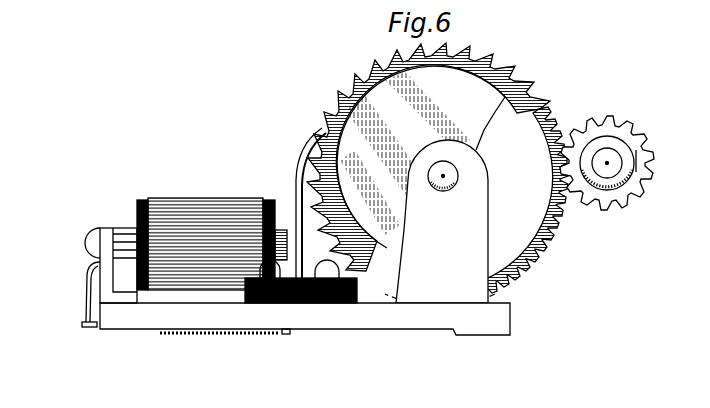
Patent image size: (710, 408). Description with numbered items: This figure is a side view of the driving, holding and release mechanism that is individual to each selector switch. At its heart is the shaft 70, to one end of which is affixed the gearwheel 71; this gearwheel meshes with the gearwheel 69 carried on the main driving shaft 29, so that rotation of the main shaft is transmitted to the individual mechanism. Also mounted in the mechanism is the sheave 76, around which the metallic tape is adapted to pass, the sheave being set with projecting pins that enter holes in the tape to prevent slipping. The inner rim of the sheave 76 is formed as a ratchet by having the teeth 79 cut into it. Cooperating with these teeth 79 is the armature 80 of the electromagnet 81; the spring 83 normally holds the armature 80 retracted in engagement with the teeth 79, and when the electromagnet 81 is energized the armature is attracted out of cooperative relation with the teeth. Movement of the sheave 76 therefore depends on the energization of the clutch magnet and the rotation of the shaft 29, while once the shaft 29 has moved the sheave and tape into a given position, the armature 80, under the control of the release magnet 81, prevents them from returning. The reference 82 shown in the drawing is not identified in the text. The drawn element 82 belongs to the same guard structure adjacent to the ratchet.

The main driving shaft 29 is at (620, 163).
The gearwheel 69 is at (637, 137).
The shaft 70 is at (460, 177).
The gearwheel 71 is at (547, 100).
The sheave 76 is at (490, 83).
The teeth 79 is at (478, 58).
The armature 80 is at (299, 160).
The electromagnet 81 is at (200, 204).
The guard plate 82 is at (320, 130).
The spring 83 is at (217, 332).